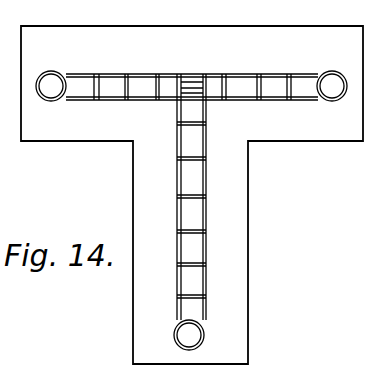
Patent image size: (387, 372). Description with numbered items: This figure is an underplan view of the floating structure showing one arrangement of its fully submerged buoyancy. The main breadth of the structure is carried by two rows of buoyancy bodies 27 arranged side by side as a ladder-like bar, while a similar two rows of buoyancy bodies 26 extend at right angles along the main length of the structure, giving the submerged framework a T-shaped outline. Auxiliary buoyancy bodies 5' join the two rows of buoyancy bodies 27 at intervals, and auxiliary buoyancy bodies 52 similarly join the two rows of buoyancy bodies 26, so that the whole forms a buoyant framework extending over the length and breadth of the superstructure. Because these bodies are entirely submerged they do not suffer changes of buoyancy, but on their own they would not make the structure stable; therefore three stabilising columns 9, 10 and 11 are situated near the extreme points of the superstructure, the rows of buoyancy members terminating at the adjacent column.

The buoyancy bodies 27 is at (272, 75).
The auxiliary buoyancy bodies 5' is at (192, 70).
The buoyancy bodies 26 is at (206, 202).
The auxiliary buoyancy bodies 52 is at (206, 232).
The stabilising column 9 is at (52, 101).
The stabilising column 10 is at (333, 101).
The stabilising column 11 is at (195, 335).